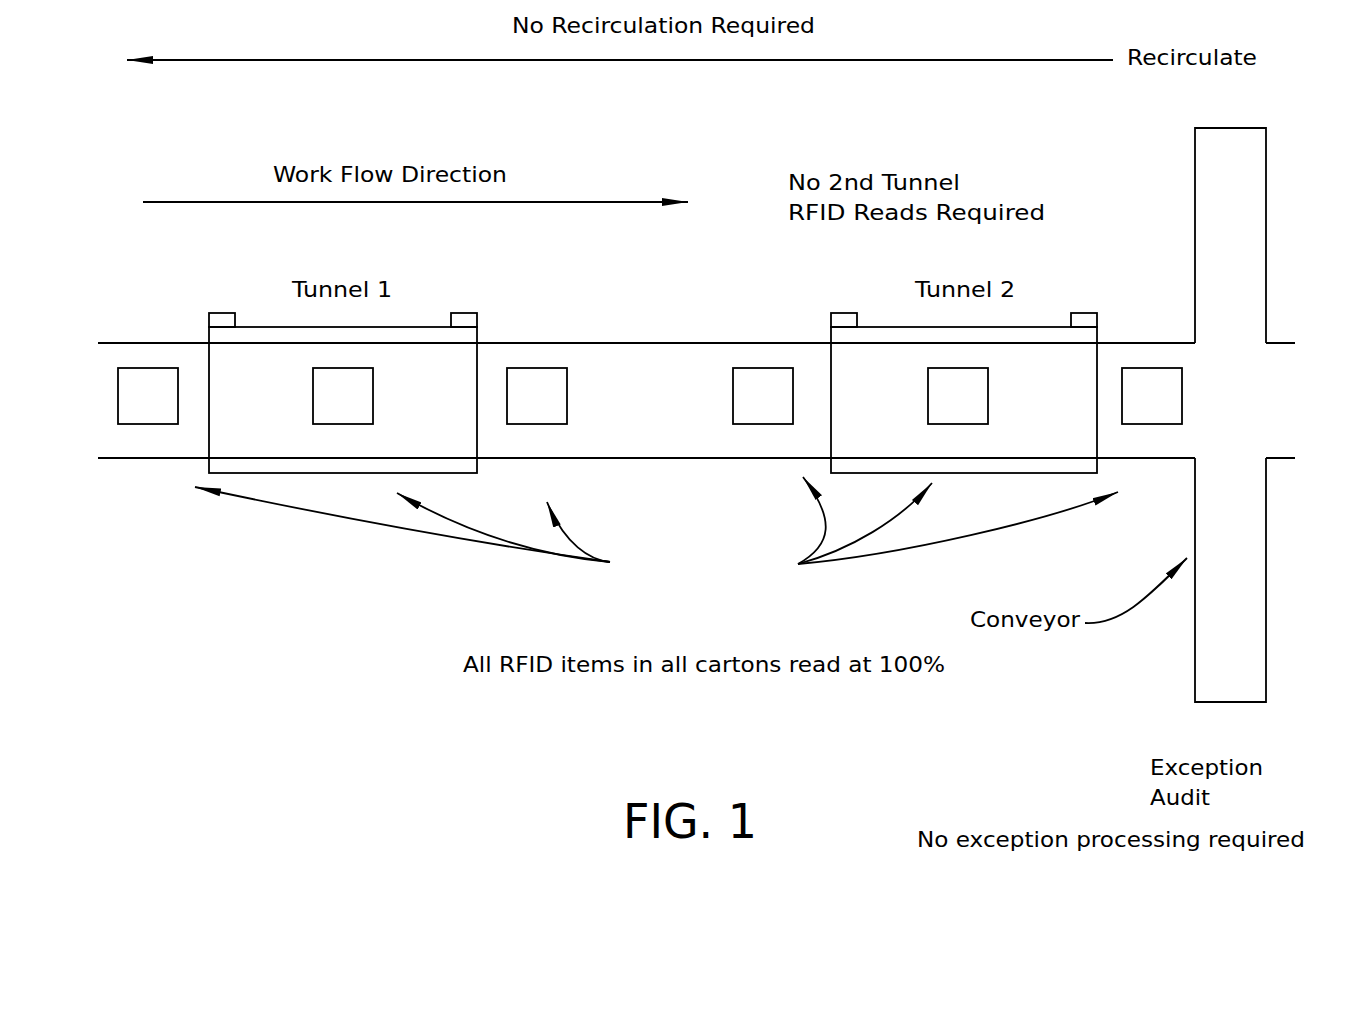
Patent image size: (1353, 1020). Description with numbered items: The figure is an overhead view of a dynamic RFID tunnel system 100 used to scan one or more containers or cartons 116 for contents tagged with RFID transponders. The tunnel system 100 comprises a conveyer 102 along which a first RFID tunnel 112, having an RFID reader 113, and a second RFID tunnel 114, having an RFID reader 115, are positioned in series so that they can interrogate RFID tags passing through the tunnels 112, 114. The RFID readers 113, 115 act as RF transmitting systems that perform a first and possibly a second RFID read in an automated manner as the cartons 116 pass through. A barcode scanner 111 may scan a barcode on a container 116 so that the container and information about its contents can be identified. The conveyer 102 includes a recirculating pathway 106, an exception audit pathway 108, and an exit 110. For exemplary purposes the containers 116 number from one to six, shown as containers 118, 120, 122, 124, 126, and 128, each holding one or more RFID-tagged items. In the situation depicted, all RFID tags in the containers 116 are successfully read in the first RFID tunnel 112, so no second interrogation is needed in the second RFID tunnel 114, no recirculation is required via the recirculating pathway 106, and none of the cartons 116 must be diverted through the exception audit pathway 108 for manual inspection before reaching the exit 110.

The dynamic RFID tunnel system 100 is at (270, 563).
The conveyer 102 is at (650, 317).
The recirculating pathway 106 is at (1248, 204).
The exception audit pathway 108 is at (1248, 652).
The exit 110 is at (1293, 407).
The barcode scanner 111 is at (221, 313).
The first RFID tunnel 112 is at (405, 326).
The RFID reader 113 is at (477, 319).
The second RFID tunnel 114 is at (1050, 327).
The RFID reader 115 is at (1097, 318).
The containers or cartons 116 is at (783, 571).
The container one 118 is at (151, 424).
The container two 120 is at (343, 424).
The container three 122 is at (545, 424).
The container four 124 is at (763, 424).
The container five 126 is at (958, 424).
The container six 128 is at (1158, 424).